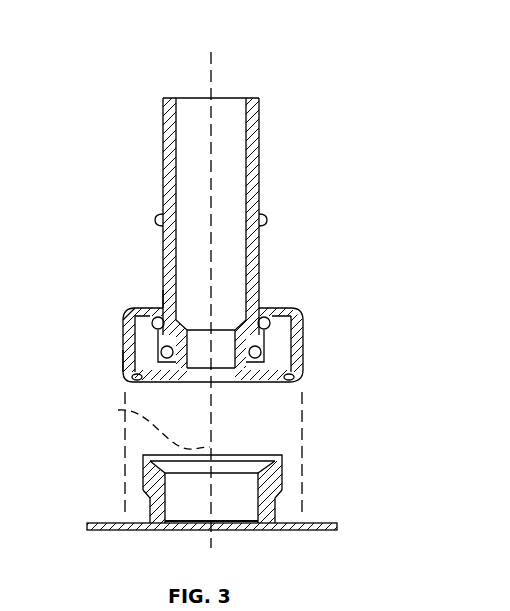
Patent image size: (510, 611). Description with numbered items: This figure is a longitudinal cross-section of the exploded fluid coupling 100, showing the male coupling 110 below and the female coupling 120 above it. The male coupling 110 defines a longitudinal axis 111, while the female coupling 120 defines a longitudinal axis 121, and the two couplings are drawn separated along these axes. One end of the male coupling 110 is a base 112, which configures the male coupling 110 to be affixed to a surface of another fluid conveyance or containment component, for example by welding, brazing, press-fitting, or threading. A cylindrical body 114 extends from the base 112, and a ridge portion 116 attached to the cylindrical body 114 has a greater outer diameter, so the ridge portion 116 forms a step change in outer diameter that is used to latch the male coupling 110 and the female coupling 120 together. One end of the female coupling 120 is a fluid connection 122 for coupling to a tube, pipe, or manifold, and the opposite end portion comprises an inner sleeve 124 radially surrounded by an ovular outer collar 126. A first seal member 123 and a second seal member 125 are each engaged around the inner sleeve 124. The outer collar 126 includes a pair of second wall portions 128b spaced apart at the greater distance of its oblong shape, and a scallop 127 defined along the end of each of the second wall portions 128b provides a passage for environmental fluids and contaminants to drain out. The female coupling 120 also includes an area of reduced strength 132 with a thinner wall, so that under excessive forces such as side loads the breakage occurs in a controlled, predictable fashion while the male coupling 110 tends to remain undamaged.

The fluid coupling 100 is at (332, 189).
The male coupling portion 110 is at (201, 463).
The longitudinal axis 111 is at (117, 410).
The base 112 is at (323, 521).
The cylindrical body 114 is at (150, 508).
The ridge portion 116 is at (143, 492).
The female coupling portion 120 is at (322, 343).
The longitudinal axis 121 is at (213, 72).
The fluid connection 122 is at (163, 173).
The first seal member 123 is at (168, 346).
The inner sleeve 124 is at (128, 336).
The second seal member 125 is at (270, 325).
The ovular outer collar 126 is at (126, 314).
The scallop 127 is at (292, 375).
The second wall portions 128b is at (124, 358).
The area of reduced strength 132 is at (163, 295).